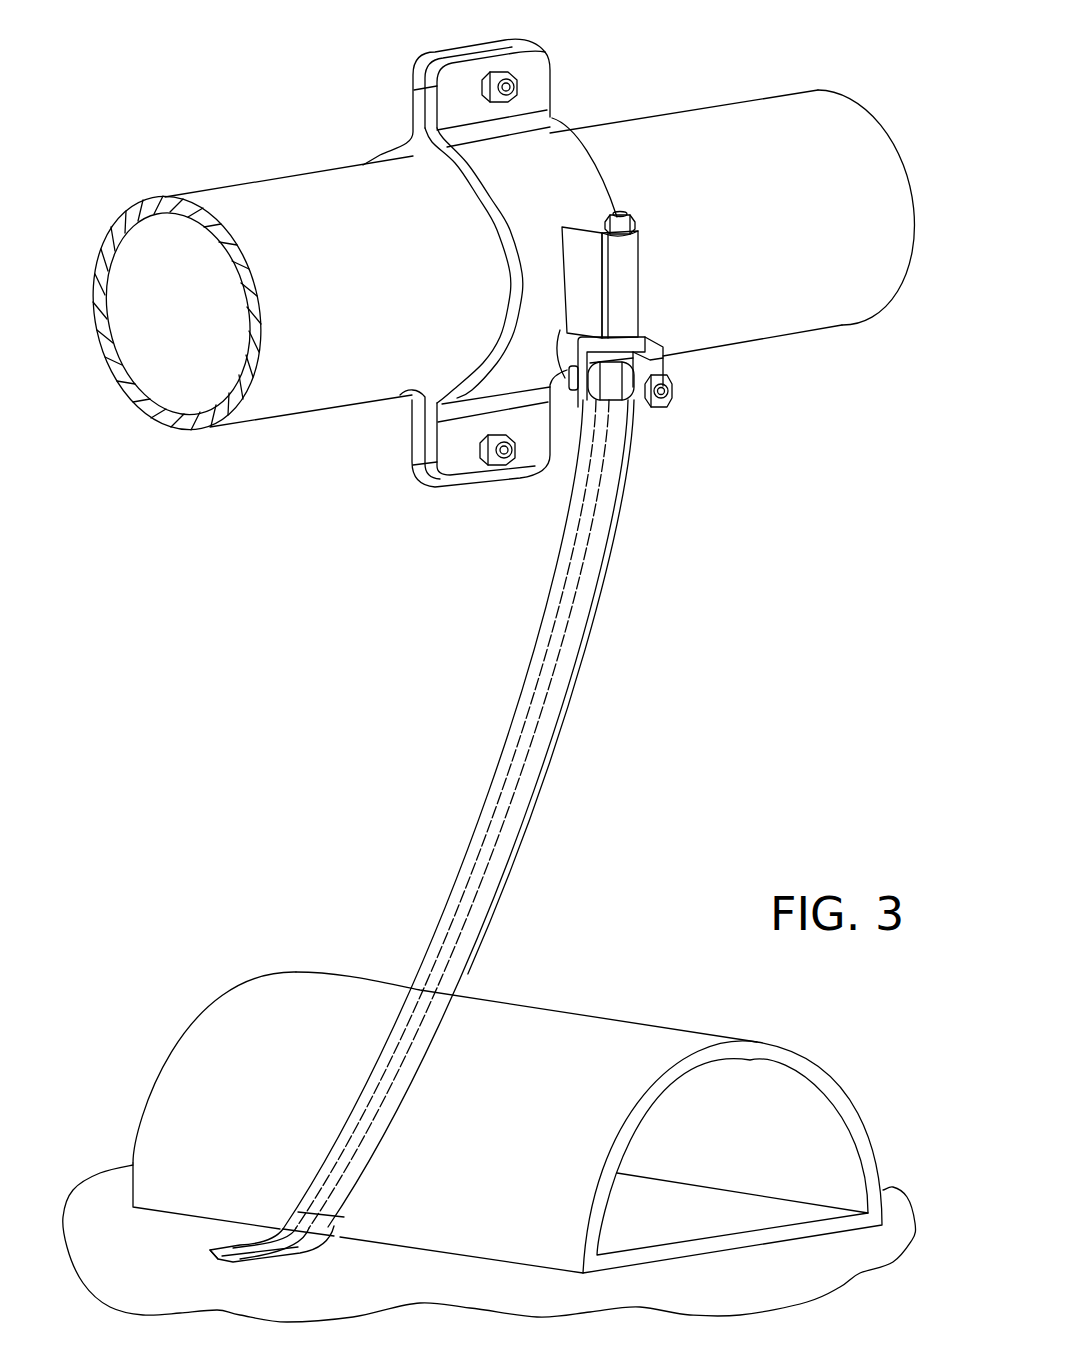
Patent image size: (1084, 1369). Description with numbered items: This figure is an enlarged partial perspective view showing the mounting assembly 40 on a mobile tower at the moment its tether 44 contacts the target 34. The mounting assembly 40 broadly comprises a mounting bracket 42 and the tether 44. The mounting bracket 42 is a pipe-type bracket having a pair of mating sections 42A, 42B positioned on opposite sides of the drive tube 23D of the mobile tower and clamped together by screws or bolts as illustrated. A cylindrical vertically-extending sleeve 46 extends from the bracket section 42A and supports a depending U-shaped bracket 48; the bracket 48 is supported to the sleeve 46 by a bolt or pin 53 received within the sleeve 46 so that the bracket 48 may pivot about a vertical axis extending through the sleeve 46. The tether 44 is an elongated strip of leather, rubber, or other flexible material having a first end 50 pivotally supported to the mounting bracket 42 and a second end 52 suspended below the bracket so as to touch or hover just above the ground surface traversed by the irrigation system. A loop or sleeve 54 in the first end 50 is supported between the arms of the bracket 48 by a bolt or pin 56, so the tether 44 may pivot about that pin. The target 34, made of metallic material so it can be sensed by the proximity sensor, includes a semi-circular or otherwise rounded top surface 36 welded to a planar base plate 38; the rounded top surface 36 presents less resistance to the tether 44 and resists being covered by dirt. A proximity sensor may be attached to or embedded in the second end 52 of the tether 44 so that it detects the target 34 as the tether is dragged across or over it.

The drive tube 23D is at (788, 292).
The mounting assembly 40 is at (592, 70).
The mounting bracket 42 is at (412, 50).
The bracket section 42A is at (568, 163).
The bracket section 42B is at (392, 156).
The bolt or pin 53 is at (618, 216).
The sleeve 46 is at (627, 258).
The U-shaped bracket 48 is at (655, 346).
The first end of tether 50 is at (665, 417).
The loop or sleeve 54 is at (633, 432).
The bolt or pin 56 is at (658, 420).
The tether 44 is at (422, 851).
The second end of tether 52 is at (283, 1260).
The target 34 is at (526, 1118).
The top surface 36 is at (615, 1037).
The base plate 38 is at (665, 1232).